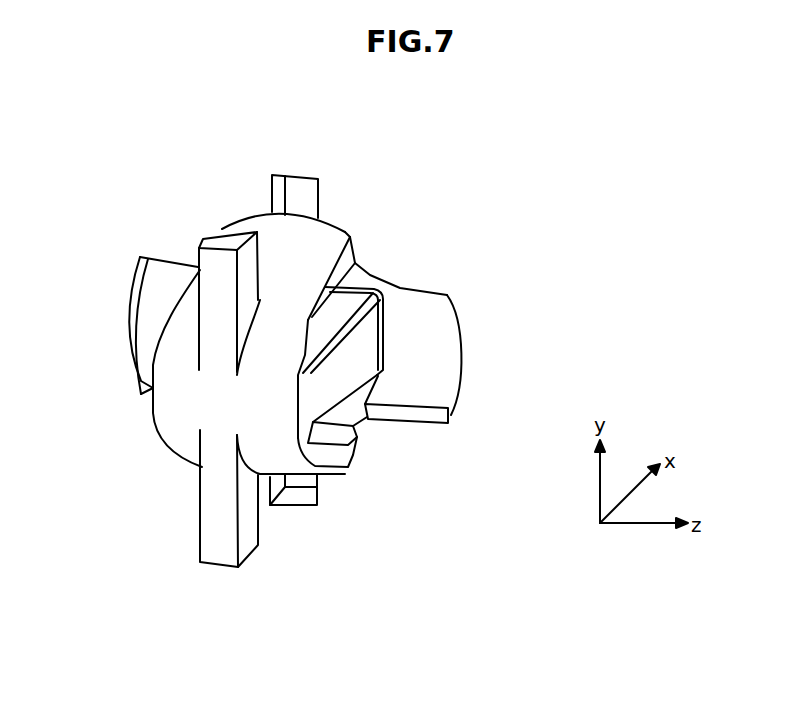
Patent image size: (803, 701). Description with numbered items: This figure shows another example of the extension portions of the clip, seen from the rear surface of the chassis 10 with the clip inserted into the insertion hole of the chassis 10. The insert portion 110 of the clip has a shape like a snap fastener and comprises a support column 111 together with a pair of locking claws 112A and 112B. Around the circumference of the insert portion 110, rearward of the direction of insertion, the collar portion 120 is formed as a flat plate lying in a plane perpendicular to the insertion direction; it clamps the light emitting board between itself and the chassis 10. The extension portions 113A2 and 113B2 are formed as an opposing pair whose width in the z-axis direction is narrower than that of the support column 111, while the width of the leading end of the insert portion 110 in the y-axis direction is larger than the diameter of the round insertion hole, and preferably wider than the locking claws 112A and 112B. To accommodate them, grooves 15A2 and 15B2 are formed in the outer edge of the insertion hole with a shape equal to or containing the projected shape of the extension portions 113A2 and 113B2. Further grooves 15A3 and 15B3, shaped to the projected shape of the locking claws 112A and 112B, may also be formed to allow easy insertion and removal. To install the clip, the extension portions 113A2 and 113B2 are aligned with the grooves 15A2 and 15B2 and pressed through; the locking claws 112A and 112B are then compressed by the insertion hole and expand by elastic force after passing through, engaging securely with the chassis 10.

The chassis 10 is at (447, 250).
The insert portion 110 is at (209, 399).
The support column 111 is at (350, 348).
The locking claw 112A is at (338, 242).
The locking claw 112B is at (351, 467).
The extension portion 113A2 is at (224, 240).
The extension portion 113B2 is at (222, 553).
The groove 15A2 is at (296, 190).
The groove 15B2 is at (300, 493).
The groove 15A3 is at (436, 364).
The groove 15B3 is at (136, 325).
The collar portion 120 is at (364, 405).